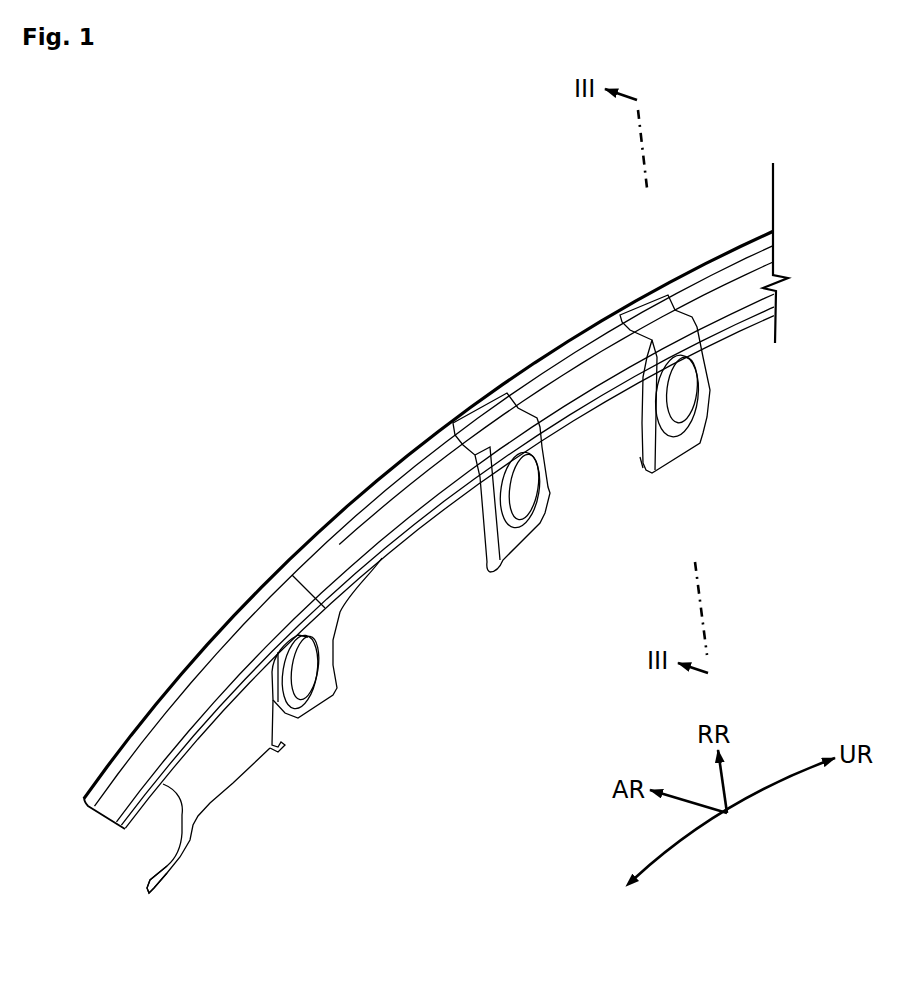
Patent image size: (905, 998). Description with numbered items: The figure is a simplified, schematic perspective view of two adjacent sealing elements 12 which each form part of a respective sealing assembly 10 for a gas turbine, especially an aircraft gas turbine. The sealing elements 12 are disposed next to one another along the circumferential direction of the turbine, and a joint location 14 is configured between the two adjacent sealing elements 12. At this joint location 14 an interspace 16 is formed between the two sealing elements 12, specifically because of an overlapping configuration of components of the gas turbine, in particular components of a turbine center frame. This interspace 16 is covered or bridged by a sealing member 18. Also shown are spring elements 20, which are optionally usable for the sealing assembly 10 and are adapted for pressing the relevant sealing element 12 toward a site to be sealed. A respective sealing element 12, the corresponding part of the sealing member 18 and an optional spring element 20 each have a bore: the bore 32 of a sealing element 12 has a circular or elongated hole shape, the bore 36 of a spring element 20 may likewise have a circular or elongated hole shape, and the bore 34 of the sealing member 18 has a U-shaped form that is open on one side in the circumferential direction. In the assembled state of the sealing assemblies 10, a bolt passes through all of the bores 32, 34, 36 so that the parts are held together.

The sealing assembly 10 is at (498, 332).
The sealing element 12 is at (742, 268).
The joint location 14 is at (566, 326).
The interspace 16 is at (586, 335).
The sealing member 18 is at (587, 433).
The spring element 20 is at (508, 541).
The bore 32 is at (312, 662).
The bore 34 is at (278, 709).
The bore 36 is at (534, 490).